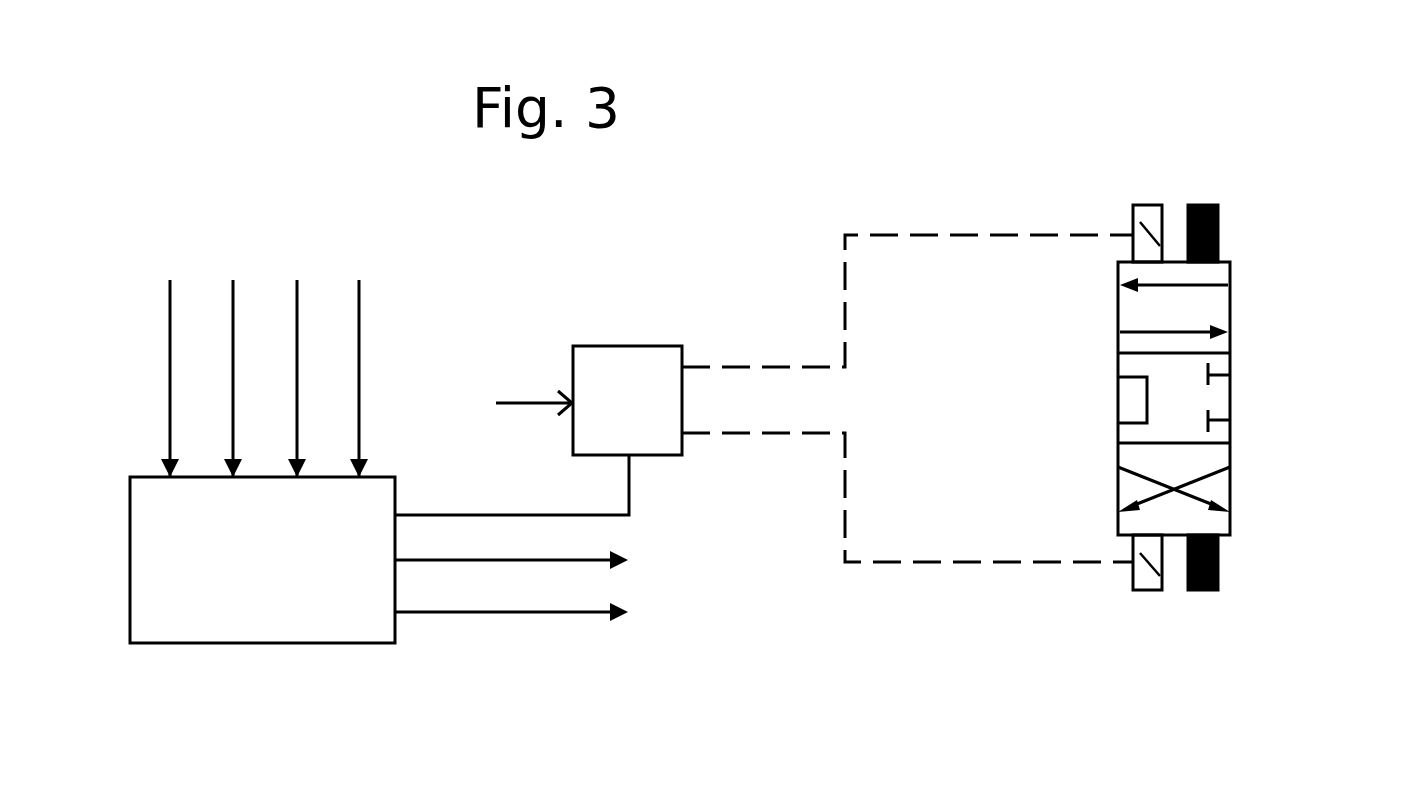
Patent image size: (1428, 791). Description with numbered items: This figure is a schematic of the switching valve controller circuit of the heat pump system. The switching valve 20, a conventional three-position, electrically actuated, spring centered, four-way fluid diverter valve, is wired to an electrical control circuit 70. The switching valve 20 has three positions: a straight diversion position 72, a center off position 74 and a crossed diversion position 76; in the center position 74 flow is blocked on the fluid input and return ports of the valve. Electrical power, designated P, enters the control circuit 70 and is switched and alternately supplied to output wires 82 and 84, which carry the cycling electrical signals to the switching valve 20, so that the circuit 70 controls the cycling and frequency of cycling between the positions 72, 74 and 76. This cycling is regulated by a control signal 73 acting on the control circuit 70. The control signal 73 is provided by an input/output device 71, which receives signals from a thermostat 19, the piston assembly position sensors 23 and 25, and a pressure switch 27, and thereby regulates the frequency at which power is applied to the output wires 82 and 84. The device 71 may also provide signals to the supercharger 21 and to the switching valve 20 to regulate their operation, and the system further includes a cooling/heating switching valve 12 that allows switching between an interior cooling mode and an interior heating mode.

The cooling/heating switching valve 12 is at (534, 559).
The thermostat 19 is at (170, 358).
The switching valve 20 is at (1192, 397).
The supercharger 21 is at (534, 611).
The piston assembly position sensor 23 is at (233, 358).
The piston assembly position sensor 25 is at (297, 358).
The pressure switch 27 is at (359, 358).
The electrical control circuit 70 is at (640, 346).
The input/output device 71 is at (253, 643).
The straight diversion position 72 is at (1232, 308).
The control signal 73 is at (478, 515).
The center off position 74 is at (1232, 407).
The crossed diversion position 76 is at (1232, 485).
The output wire 82 is at (1082, 232).
The output wire 84 is at (1082, 562).